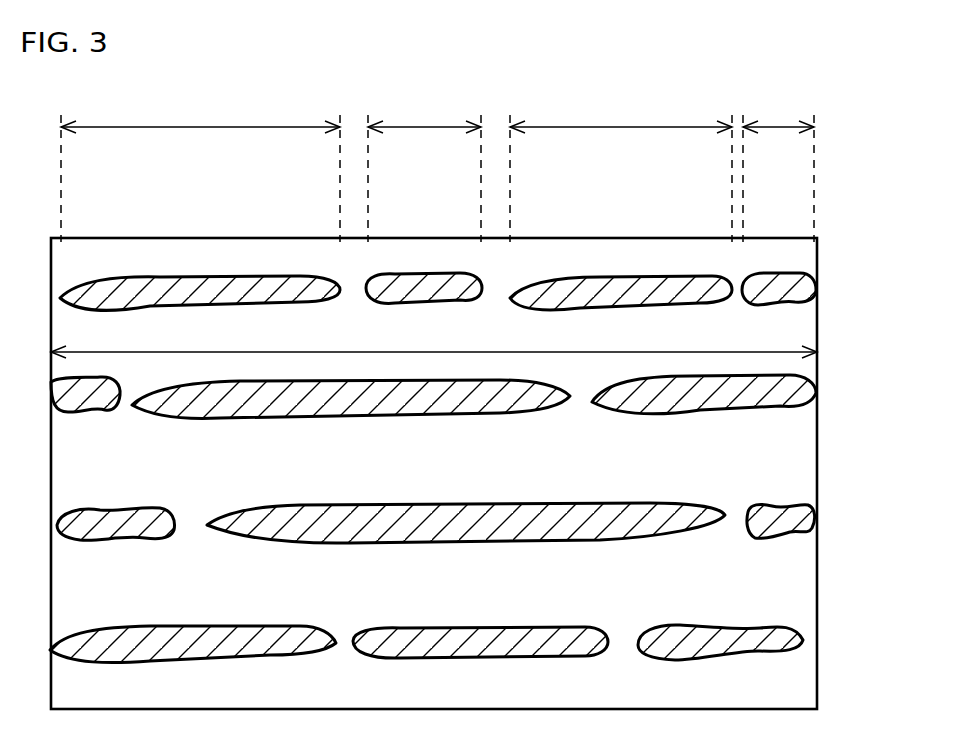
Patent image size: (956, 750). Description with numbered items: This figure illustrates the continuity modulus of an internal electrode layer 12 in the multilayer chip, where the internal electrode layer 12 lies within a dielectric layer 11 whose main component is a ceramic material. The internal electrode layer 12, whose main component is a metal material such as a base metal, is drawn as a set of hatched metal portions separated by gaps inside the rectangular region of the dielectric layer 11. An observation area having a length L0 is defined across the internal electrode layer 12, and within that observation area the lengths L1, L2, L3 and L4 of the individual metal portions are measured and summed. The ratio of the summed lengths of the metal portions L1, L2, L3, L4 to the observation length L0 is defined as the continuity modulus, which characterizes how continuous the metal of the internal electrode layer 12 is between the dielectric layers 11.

The dielectric layer 11 is at (797, 455).
The internal electrode layer 12 is at (797, 290).
The length of observation area L0 is at (434, 340).
The length of metal portion L1 is at (200, 165).
The length of metal portion L2 is at (424, 165).
The length of metal portion L3 is at (621, 165).
The length of metal portion L4 is at (778, 165).